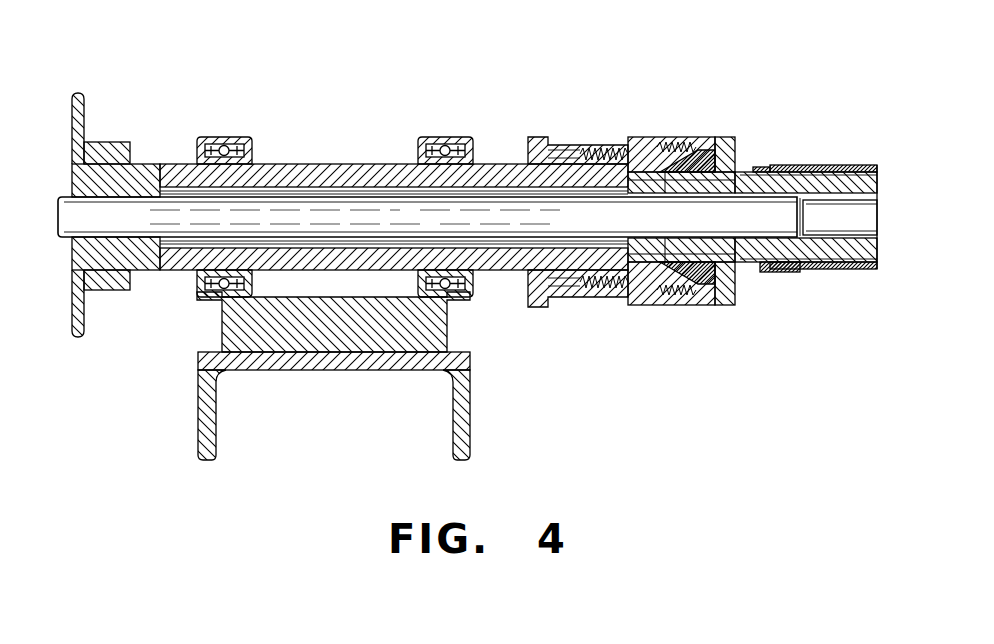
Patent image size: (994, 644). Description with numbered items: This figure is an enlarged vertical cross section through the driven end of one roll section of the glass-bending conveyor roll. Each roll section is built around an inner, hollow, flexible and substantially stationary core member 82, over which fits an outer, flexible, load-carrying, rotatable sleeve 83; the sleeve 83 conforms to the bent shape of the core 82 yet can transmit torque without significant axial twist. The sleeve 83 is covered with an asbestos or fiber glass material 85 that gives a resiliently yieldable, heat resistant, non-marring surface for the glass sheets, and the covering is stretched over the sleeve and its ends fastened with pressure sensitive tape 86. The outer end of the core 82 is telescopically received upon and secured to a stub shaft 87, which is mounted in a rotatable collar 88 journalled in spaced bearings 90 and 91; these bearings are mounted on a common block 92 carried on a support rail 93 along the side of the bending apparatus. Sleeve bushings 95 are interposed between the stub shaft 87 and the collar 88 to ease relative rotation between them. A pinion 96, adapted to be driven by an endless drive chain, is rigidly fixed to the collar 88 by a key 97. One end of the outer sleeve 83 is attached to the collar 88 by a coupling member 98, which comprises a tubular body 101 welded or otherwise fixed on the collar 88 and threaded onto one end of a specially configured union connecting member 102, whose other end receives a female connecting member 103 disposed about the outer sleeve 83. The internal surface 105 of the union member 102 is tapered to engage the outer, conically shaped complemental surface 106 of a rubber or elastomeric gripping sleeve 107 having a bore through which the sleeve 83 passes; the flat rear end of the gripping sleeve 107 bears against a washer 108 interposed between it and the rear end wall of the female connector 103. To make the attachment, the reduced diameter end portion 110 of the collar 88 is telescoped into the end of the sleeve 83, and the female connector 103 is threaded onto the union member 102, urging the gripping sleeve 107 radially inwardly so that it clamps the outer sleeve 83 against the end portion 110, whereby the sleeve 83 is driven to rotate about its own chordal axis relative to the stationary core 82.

The core member 82 is at (878, 185).
The outer sleeve 83 is at (850, 172).
The asbestos or fiber glass material 85 is at (820, 165).
The pressure sensitive tape 86 is at (762, 166).
The stub shaft 87 is at (806, 222).
The collar 88 is at (488, 172).
The bearing 90 is at (430, 142).
The bearing 91 is at (222, 148).
The block 92 is at (226, 320).
The support rail 93 is at (206, 402).
The sleeve bushings 95 is at (60, 238).
The pinion 96 is at (82, 100).
The key 97 is at (112, 146).
The coupling member 98 is at (686, 106).
The tubular body 101 is at (548, 145).
The union connecting member 102 is at (634, 146).
The female connecting member 103 is at (670, 137).
The internal surface 105 is at (676, 254).
The complemental surface 106 is at (668, 300).
The gripping sleeve 107 is at (700, 300).
The washer 108 is at (720, 137).
The reduced diameter end portion 110 is at (695, 190).